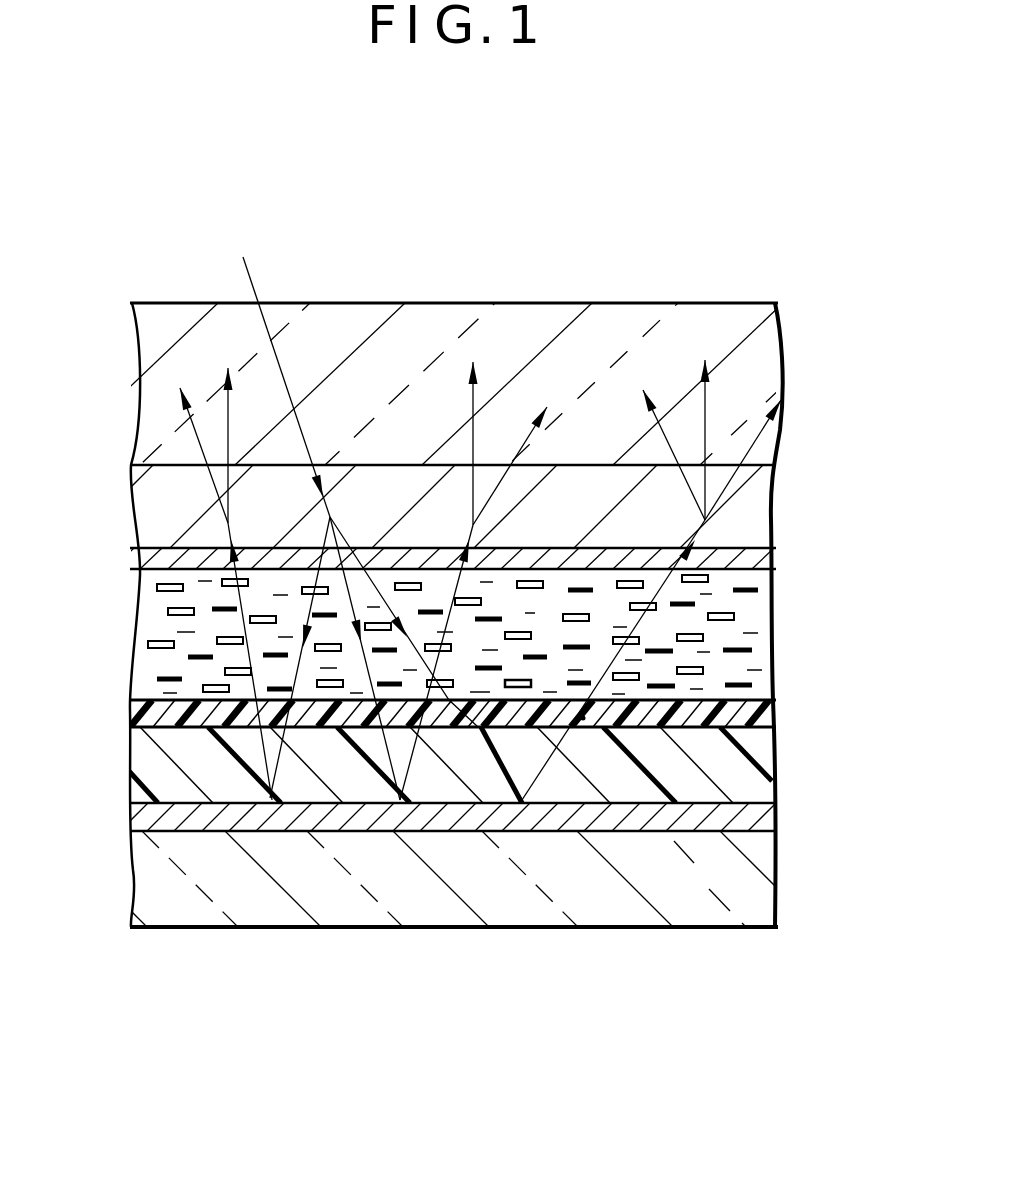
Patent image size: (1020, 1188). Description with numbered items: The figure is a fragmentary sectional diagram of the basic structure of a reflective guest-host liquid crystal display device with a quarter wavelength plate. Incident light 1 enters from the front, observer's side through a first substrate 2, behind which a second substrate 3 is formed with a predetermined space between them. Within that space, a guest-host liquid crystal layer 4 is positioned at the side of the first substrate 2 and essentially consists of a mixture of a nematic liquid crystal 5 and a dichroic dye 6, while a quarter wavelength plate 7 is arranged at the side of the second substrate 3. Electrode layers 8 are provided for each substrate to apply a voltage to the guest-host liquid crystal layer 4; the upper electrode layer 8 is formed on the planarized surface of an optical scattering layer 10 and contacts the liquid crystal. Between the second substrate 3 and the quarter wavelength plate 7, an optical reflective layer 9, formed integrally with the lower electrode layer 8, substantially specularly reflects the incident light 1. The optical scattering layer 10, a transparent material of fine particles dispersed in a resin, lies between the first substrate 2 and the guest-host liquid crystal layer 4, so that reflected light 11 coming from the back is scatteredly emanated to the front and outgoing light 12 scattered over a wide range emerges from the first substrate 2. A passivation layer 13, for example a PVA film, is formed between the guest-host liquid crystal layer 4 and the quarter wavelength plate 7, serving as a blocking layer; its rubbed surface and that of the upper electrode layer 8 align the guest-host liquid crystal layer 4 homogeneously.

The incident light 1 is at (255, 279).
The first substrate 2 is at (758, 374).
The second substrate 3 is at (758, 896).
The guest-host liquid crystal layer 4 is at (758, 618).
The nematic liquid crystal 5 is at (152, 645).
The dichroic dye 6 is at (160, 682).
The quarter wavelength plate 7 is at (758, 771).
The electrode layer 8 is at (765, 569).
The optical reflective layer 9 is at (763, 824).
The optical scattering layer 10 is at (748, 522).
The reflected light 11 is at (583, 718).
The outgoing light 12 is at (668, 440).
The passivation layer 13 is at (758, 722).